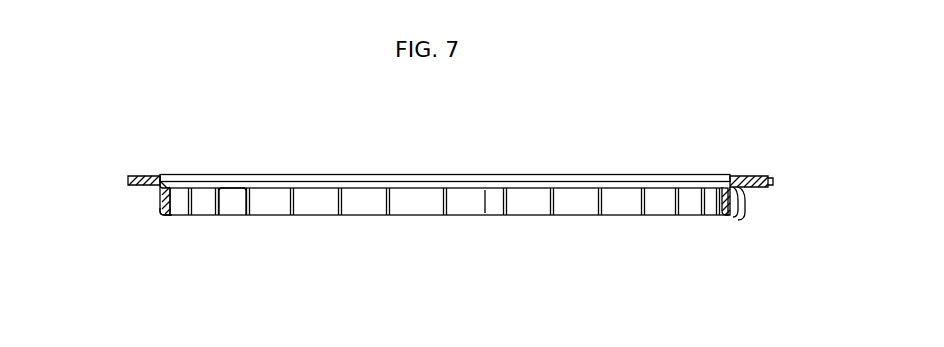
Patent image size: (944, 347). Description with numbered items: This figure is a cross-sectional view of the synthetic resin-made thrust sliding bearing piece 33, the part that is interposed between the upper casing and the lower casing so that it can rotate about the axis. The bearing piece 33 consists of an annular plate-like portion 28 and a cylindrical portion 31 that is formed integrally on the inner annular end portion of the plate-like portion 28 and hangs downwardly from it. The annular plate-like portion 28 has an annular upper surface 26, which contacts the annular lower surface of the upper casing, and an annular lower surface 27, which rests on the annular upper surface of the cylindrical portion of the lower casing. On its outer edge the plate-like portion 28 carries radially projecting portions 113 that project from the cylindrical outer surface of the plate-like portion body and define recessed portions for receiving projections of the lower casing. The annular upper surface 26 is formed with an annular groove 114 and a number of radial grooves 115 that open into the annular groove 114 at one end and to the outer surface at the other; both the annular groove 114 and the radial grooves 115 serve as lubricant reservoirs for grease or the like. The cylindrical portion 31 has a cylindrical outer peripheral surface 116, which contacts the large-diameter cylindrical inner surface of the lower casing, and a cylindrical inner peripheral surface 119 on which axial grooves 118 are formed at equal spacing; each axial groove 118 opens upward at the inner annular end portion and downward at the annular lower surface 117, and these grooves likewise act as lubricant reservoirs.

The annular upper surface 26 is at (445, 175).
The annular lower surface 27 is at (745, 192).
The annular plate-like portion 28 is at (143, 183).
The cylindrical portion 31 is at (165, 200).
The thrust sliding bearing piece 33 is at (163, 218).
The radially projecting portion 113 is at (772, 181).
The annular groove 114 is at (158, 175).
The radial groove 115 is at (750, 177).
The cylindrical outer peripheral surface 116 is at (733, 215).
The annular lower surface 117 is at (415, 215).
The axial groove 118 is at (455, 198).
The cylindrical inner peripheral surface 119 is at (233, 200).